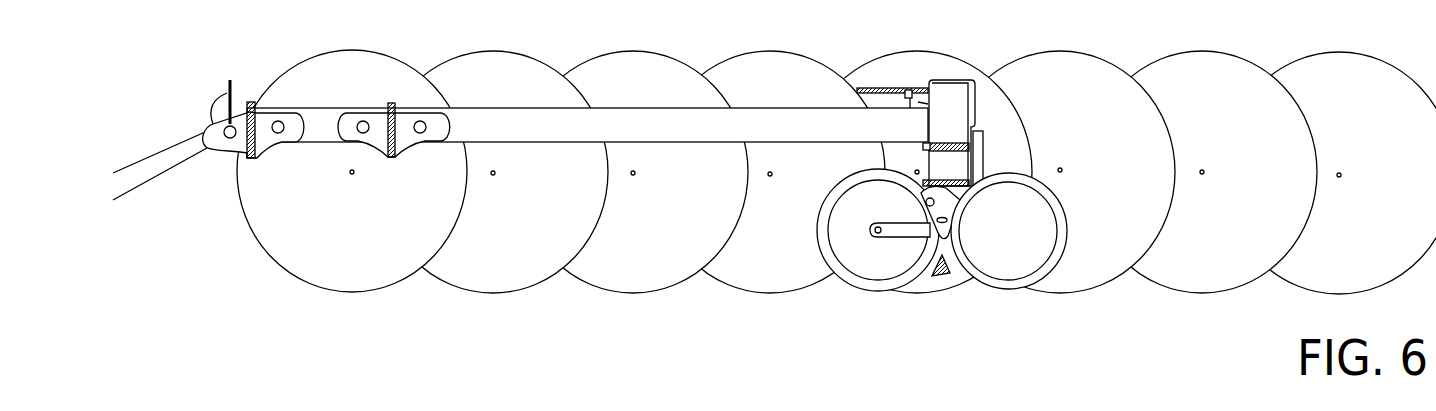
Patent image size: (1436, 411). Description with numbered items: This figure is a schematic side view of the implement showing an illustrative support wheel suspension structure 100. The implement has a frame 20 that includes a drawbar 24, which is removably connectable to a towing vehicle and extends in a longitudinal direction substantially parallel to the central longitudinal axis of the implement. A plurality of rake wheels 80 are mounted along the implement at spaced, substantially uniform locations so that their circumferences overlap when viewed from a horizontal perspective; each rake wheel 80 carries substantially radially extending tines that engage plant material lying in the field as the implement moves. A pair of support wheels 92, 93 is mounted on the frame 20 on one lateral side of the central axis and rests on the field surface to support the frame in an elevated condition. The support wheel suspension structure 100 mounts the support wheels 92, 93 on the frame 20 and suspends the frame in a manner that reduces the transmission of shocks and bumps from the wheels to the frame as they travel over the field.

The frame 20 is at (944, 86).
The drawbar 24 is at (552, 143).
The rake wheel 80 is at (745, 292).
The support wheel 92 is at (887, 293).
The support wheel 93 is at (1060, 262).
The support wheel suspension structure 100 is at (937, 280).